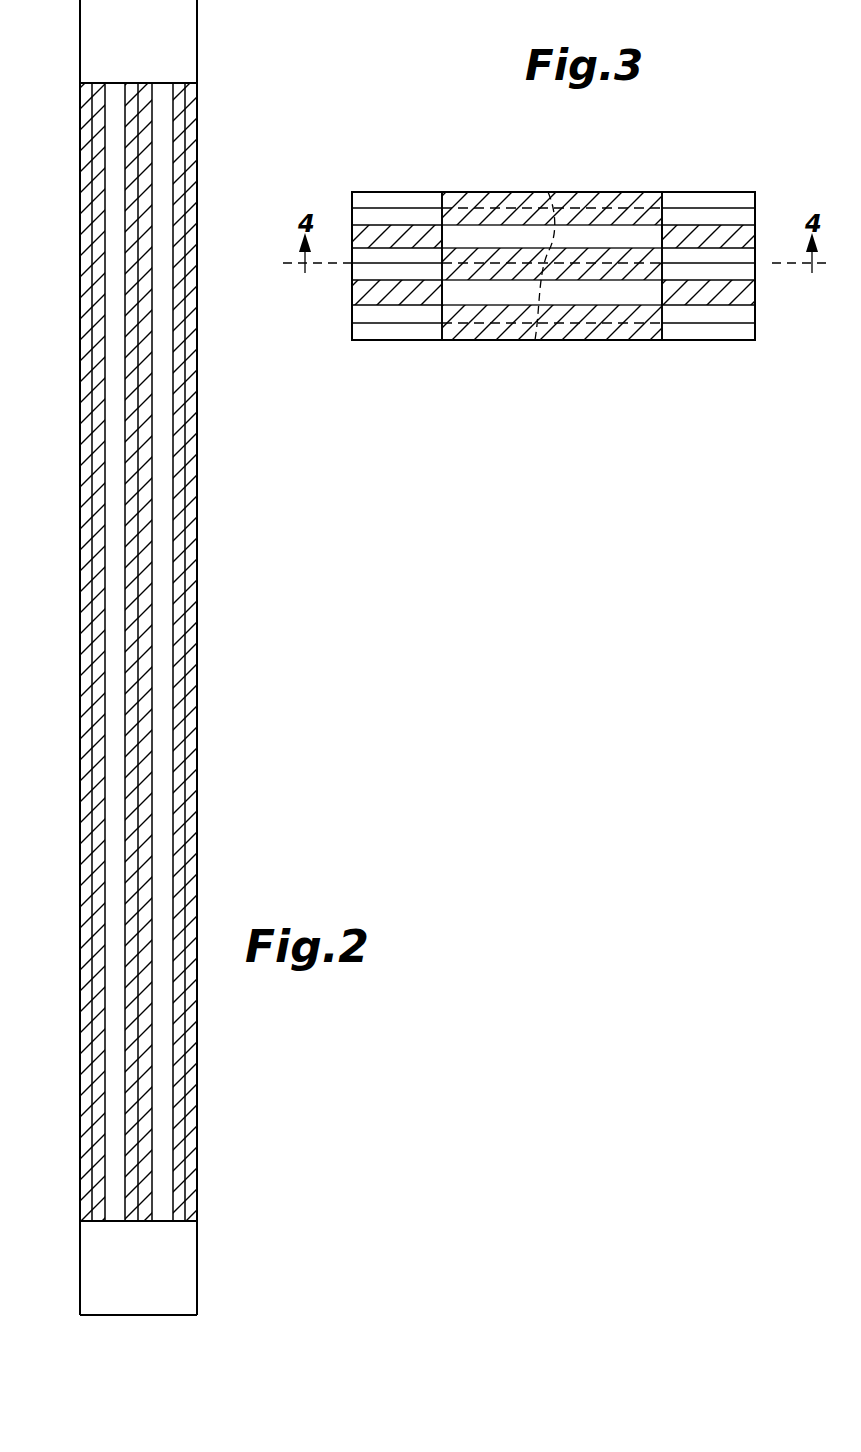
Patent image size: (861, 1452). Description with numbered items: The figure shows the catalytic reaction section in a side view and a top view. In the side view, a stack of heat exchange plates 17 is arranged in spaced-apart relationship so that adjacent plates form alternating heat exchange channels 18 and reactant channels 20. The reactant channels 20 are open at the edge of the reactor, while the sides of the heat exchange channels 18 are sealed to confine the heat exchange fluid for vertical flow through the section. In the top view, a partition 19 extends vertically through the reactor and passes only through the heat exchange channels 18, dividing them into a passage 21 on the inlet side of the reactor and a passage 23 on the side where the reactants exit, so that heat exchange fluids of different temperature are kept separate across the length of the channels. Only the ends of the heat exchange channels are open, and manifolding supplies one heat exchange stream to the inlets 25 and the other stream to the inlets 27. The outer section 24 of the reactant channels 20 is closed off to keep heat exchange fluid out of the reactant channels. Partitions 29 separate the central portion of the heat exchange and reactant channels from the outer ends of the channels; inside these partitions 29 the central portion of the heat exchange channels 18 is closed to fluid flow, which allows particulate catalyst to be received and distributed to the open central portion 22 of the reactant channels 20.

In FIG. 2, the heat exchange plate 17 is at (123, 367).
In FIG. 3, the heat exchange plate 17 is at (477, 240).
In FIG. 2, the heat exchange channel 18 is at (145, 552).
In FIG. 3, the heat exchange channel 18 is at (628, 240).
In FIG. 3, the partition 19 is at (565, 192).
In FIG. 2, the reactant channel 20 is at (117, 808).
In FIG. 3, the reactant channel 20 is at (592, 225).
In FIG. 3, the passage 21 is at (443, 340).
In FIG. 3, the central portion of reactant channels 22 is at (640, 300).
In FIG. 3, the passage 23 is at (665, 340).
In FIG. 3, the outer section of reactant channels 24 is at (350, 237).
In FIG. 3, the inlet 25 is at (387, 197).
In FIG. 3, the inlet 27 is at (757, 167).
In FIG. 3, the partition 29 is at (452, 225).